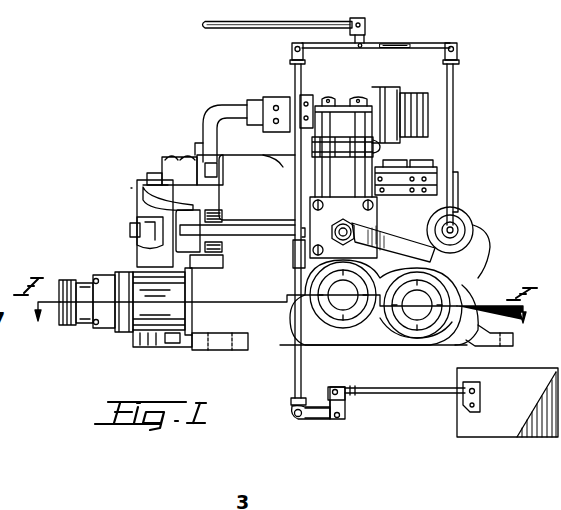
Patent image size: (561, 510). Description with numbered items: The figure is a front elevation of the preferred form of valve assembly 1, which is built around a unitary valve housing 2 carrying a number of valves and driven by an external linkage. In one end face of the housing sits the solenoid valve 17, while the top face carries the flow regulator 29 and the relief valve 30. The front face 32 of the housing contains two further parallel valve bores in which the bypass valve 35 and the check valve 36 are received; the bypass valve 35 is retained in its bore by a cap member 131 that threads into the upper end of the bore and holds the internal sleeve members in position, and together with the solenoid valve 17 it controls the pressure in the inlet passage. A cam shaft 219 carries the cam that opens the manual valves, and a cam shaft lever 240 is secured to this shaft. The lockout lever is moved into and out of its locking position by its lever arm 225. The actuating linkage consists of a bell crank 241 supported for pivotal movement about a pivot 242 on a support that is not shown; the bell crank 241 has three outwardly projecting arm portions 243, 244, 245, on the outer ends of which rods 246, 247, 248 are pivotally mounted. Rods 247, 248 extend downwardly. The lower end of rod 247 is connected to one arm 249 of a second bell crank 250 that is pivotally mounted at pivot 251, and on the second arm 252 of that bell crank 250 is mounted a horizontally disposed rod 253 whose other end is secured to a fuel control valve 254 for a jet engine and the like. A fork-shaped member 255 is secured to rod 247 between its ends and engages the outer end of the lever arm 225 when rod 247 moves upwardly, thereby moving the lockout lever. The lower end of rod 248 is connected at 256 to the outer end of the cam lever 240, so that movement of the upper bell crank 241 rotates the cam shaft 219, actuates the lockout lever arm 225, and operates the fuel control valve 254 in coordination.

The valve assembly 1 is at (118, 180).
The valve housing 2 is at (262, 342).
The solenoid valve 17 is at (99, 336).
The flow regulator 29 is at (442, 146).
The relief valve 30 is at (461, 183).
The front face 32 is at (340, 337).
The bypass valve 35 is at (452, 326).
The check valve 36 is at (310, 324).
The cap member 131 is at (412, 336).
The cam shaft 219 is at (360, 212).
The lever arm 225 is at (233, 235).
The cam shaft lever 240 is at (393, 238).
The bell crank 241 is at (410, 42).
The pivot 242 is at (359, 48).
The arm portion 243 is at (367, 37).
The arm portion 244 is at (318, 45).
The arm portion 245 is at (422, 50).
The rod 246 is at (223, 30).
The rod 247 is at (293, 187).
The rod 248 is at (457, 100).
The arm 249 is at (312, 420).
The bell crank 250 is at (338, 425).
The pivot 251 is at (352, 418).
The second arm 252 is at (350, 402).
The rod 253 is at (417, 386).
The fuel control valve 254 is at (493, 432).
The fork-shaped member 255 is at (291, 258).
The connection 256 is at (470, 228).